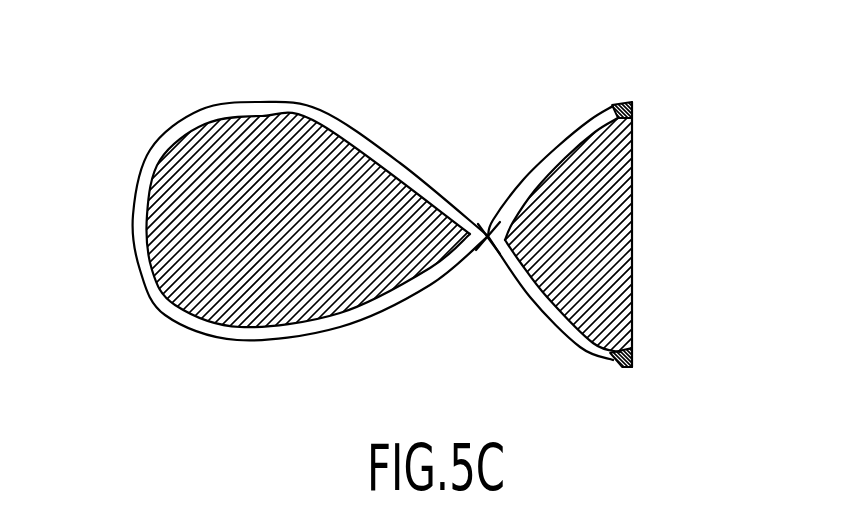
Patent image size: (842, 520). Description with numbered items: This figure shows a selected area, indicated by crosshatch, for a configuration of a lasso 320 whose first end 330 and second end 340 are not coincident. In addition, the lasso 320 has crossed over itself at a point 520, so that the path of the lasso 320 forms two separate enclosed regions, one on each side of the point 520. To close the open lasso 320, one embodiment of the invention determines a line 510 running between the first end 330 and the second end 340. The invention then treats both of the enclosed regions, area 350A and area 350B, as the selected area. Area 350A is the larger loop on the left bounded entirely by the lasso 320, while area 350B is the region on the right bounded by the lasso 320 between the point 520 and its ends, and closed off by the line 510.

The lasso 320 is at (130, 210).
The first end 330 is at (623, 368).
The second end 340 is at (614, 110).
The area 350A is at (263, 298).
The area 350B is at (563, 197).
The line 510 is at (633, 203).
The point 520 is at (490, 238).